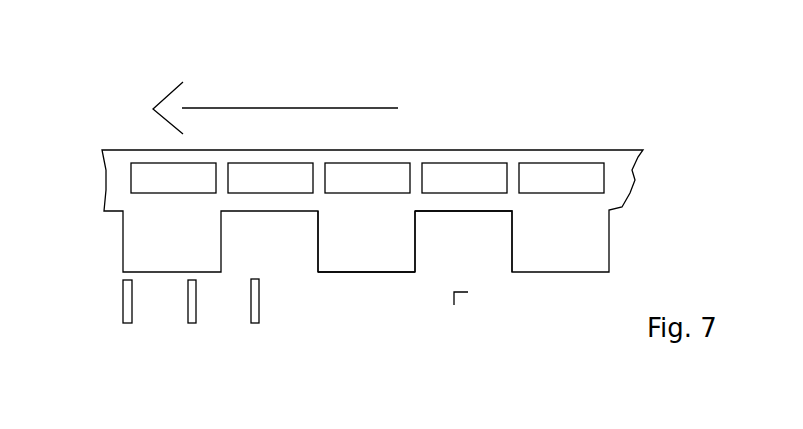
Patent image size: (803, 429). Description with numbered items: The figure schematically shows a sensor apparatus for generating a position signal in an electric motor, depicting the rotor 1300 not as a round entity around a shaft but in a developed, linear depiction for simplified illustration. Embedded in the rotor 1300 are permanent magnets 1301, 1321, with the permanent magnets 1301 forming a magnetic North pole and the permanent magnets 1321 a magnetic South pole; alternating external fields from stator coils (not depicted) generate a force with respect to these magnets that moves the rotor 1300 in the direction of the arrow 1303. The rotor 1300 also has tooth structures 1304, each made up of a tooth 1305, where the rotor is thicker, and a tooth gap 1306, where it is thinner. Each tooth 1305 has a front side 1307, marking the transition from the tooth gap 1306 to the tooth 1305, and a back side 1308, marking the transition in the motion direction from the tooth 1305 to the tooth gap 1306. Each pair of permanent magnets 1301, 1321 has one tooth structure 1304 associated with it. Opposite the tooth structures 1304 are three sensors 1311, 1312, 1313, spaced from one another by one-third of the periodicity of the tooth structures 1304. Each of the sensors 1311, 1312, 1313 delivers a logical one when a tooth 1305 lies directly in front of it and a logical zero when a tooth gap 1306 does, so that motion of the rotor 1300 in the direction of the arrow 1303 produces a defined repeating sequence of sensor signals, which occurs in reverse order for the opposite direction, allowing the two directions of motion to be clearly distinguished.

The rotor 1300 is at (417, 167).
The permanent magnets 1301 is at (327, 133).
The permanent magnets 1321 is at (377, 133).
The arrow 1303 is at (275, 108).
The tooth structure 1304 is at (497, 360).
The tooth 1305 is at (351, 343).
The tooth gap 1306 is at (508, 293).
The front side 1307 is at (306, 289).
The back side 1308 is at (435, 291).
The first sensor 1311 is at (98, 333).
The second sensor 1312 is at (171, 338).
The third sensor 1313 is at (246, 335).